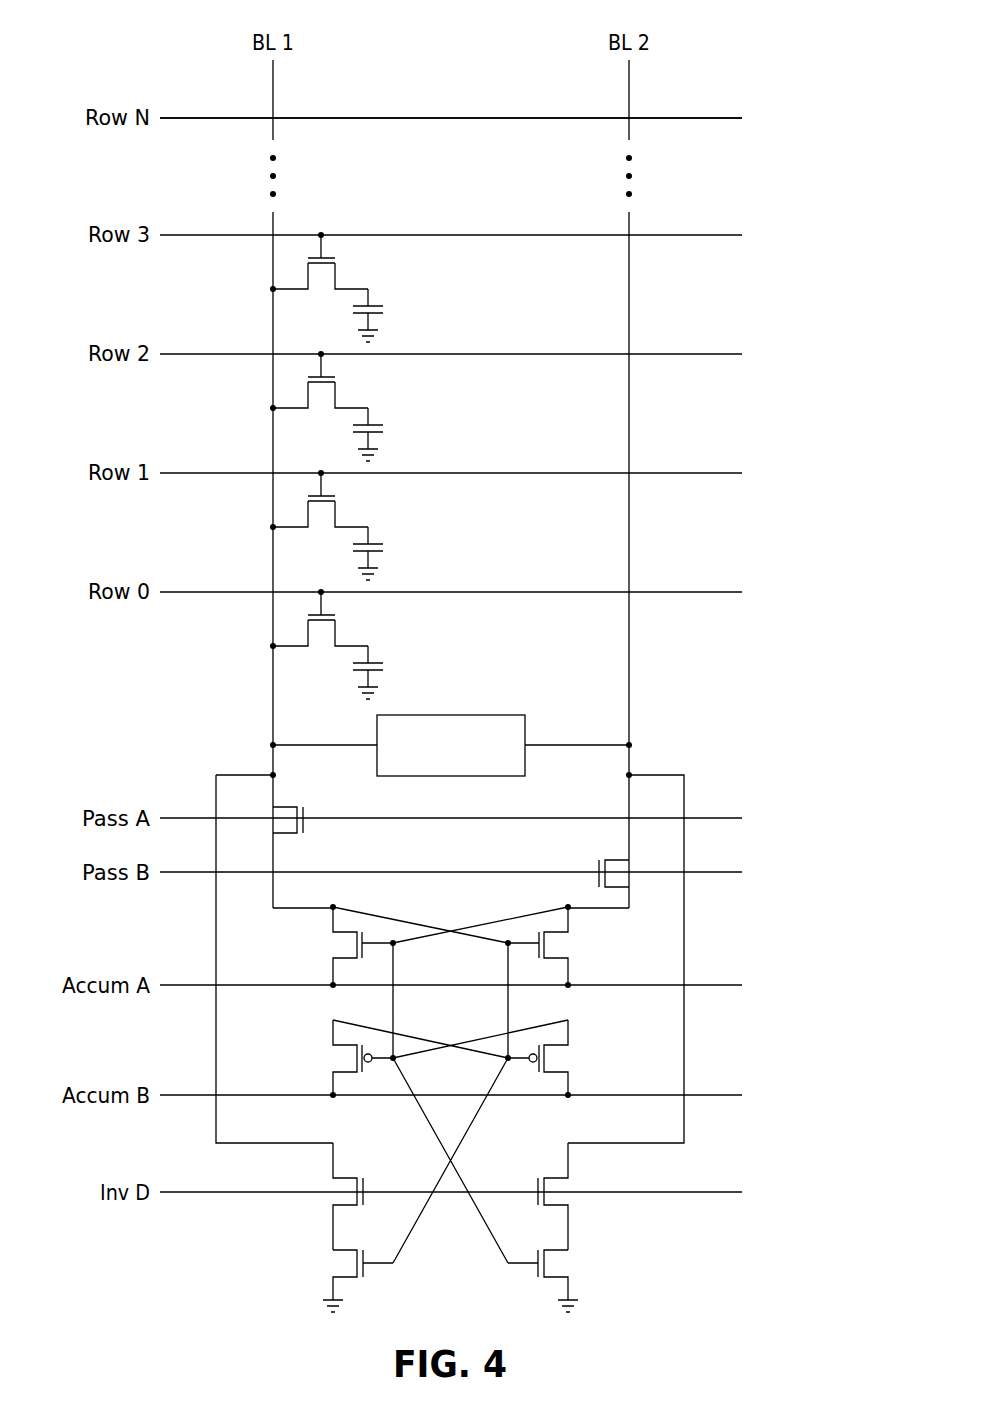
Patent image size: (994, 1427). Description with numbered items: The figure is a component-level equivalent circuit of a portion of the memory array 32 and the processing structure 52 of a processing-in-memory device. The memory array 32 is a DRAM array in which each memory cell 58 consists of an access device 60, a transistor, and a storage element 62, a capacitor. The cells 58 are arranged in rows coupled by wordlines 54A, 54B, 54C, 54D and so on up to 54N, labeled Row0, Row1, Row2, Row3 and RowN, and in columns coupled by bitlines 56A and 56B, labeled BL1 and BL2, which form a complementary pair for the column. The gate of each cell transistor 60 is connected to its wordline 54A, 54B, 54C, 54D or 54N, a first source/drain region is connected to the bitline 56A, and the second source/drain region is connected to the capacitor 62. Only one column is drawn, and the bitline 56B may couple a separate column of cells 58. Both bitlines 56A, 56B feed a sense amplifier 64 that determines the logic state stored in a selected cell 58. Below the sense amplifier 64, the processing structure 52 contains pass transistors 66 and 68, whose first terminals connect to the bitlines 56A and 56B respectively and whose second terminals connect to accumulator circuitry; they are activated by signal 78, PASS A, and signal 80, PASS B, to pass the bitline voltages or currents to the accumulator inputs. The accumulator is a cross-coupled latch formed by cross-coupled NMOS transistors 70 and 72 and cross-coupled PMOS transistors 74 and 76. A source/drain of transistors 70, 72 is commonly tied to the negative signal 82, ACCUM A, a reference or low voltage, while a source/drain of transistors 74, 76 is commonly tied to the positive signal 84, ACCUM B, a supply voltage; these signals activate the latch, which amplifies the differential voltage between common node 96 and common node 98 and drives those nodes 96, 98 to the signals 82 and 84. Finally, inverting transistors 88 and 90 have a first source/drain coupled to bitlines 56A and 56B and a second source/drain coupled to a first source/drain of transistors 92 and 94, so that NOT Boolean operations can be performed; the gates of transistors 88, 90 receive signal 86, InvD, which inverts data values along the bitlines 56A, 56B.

The memory array 32 is at (146, 80).
The processing structure 52 is at (148, 752).
The wordline 54A is at (718, 592).
The wordline 54B is at (718, 473).
The wordline 54C is at (718, 354).
The wordline 54D is at (718, 235).
The wordline 54N is at (718, 118).
The bitline 56A is at (272, 88).
The bitline 56B is at (632, 88).
The memory cell 58 is at (407, 286).
The access device 60 is at (330, 271).
The storage element 62 is at (385, 310).
The sense amplifier 64 is at (483, 715).
The pass transistor 66 is at (287, 803).
The pass transistor 68 is at (614, 860).
The cross coupled NMOS transistor 70 is at (342, 943).
The cross coupled NMOS transistor 72 is at (559, 943).
The cross coupled PMOS transistor 74 is at (342, 1058).
The cross coupled PMOS transistor 76 is at (559, 1058).
The signal 78 is at (712, 818).
The signal 80 is at (712, 872).
The negative signal 82 is at (712, 985).
The positive signal 84 is at (712, 1095).
The signal 86 is at (712, 1192).
The inverting transistor 88 is at (347, 1178).
The inverting transistor 90 is at (555, 1178).
The transistor 92 is at (345, 1283).
The transistor 94 is at (557, 1283).
The common node 96 is at (335, 905).
The common node 98 is at (566, 905).